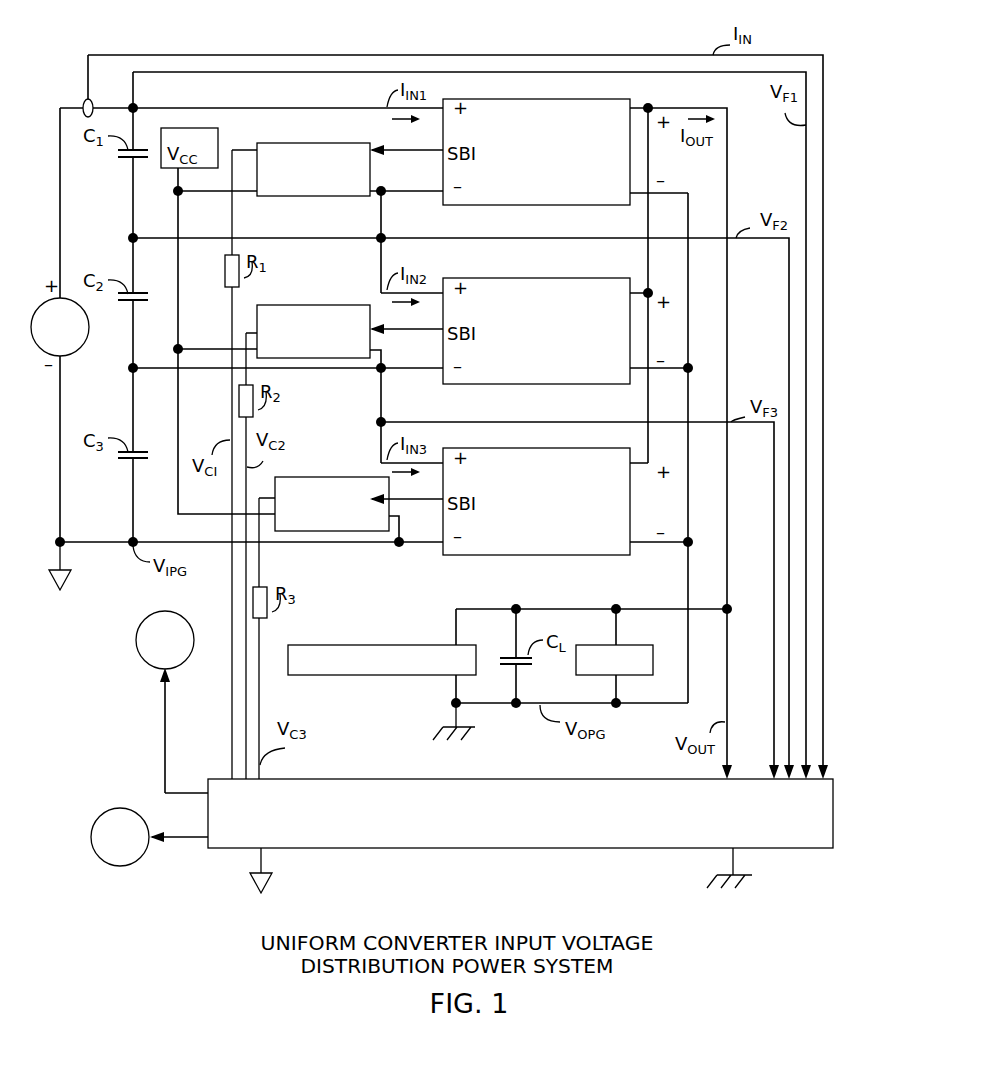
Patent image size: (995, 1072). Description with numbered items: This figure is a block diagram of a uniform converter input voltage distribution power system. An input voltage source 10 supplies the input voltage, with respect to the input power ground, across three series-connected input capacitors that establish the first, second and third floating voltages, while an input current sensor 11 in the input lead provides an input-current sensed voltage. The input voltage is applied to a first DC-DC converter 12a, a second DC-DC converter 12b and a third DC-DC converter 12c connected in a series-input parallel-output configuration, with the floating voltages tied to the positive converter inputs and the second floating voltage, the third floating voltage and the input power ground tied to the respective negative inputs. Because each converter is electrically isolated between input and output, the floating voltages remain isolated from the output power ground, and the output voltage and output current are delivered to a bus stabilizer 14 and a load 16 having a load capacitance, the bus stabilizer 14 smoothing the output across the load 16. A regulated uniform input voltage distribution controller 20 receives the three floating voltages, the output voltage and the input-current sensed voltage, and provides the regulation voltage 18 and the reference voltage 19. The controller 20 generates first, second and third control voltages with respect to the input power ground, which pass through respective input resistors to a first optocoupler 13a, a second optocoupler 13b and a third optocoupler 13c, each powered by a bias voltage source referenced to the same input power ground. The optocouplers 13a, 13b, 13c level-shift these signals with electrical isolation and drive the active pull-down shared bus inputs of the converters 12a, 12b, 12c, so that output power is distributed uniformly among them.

The input voltage source 10 is at (89, 322).
The input current sensor 11 is at (83, 102).
The first DC-DC converter 12a is at (508, 205).
The second DC-DC converter 12b is at (508, 384).
The third DC-DC converter 12c is at (508, 555).
The first optocoupler 13a is at (297, 143).
The second optocoupler 13b is at (297, 305).
The third optocoupler 13c is at (313, 477).
The bus stabilizer 14 is at (446, 644).
The load 16 is at (640, 645).
The regulation voltage 18 is at (165, 611).
The reference voltage 19 is at (118, 808).
The regulated uniform input voltage distribution controller 20 is at (310, 779).